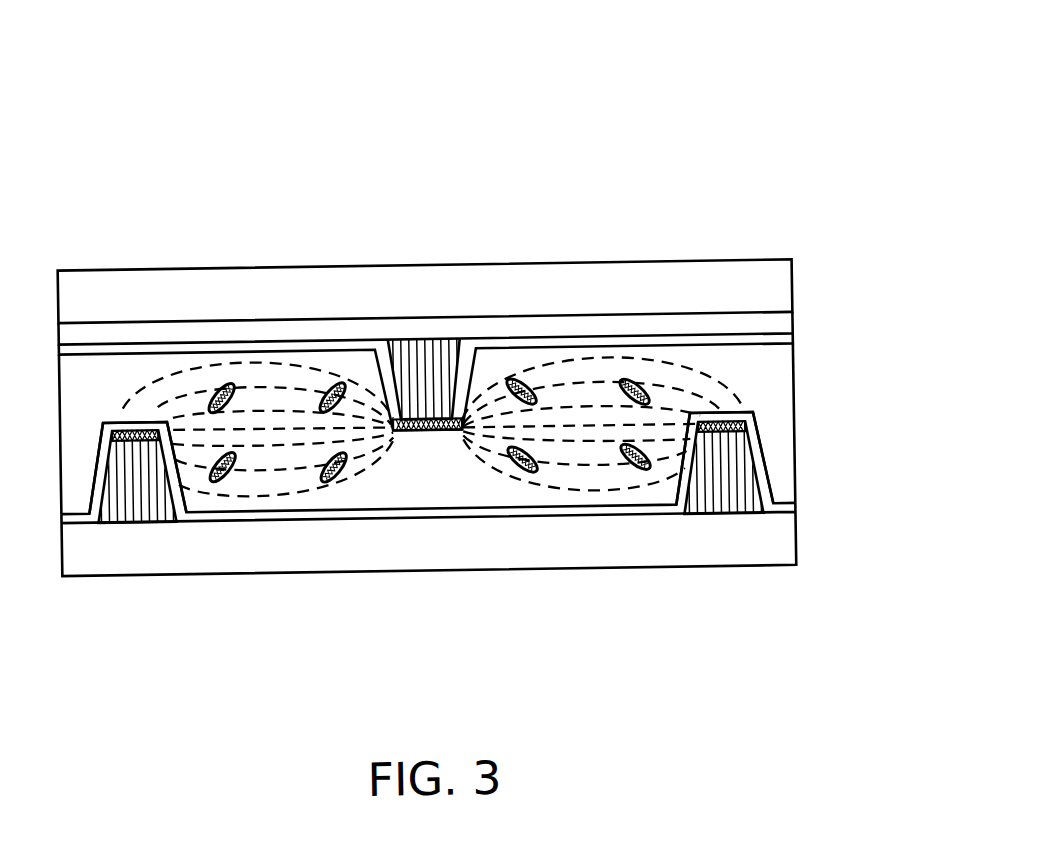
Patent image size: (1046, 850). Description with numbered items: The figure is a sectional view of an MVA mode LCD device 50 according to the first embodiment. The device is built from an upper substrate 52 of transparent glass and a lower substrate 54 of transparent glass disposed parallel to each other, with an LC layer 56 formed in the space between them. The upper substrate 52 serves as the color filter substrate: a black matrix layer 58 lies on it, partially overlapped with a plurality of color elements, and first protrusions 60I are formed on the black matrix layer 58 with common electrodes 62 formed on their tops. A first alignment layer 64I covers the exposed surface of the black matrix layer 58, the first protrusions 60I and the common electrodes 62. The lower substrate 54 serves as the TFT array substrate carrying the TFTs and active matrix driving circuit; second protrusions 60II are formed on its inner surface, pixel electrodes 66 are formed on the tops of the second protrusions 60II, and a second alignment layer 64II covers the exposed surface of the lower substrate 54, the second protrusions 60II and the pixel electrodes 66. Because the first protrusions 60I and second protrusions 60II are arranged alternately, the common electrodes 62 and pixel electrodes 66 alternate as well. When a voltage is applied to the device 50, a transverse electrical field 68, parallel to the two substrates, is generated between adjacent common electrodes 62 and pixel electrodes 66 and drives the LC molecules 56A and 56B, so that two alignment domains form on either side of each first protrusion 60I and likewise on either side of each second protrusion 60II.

The MVA mode LCD device 50 is at (788, 54).
The upper substrate 52 is at (777, 292).
The lower substrate 54 is at (780, 543).
The LC layer 56 is at (777, 438).
The LC molecules 56A is at (230, 380).
The LC molecules 56B is at (625, 380).
The black matrix layer 58 is at (777, 327).
The first protrusions 60I is at (430, 339).
The second protrusions 60II is at (131, 438).
The common electrodes 62 is at (424, 436).
The first alignment layer 64I is at (773, 348).
The second alignment layer 64II is at (775, 505).
The pixel electrodes 66 is at (131, 420).
The transverse electrical field 68 is at (170, 418).